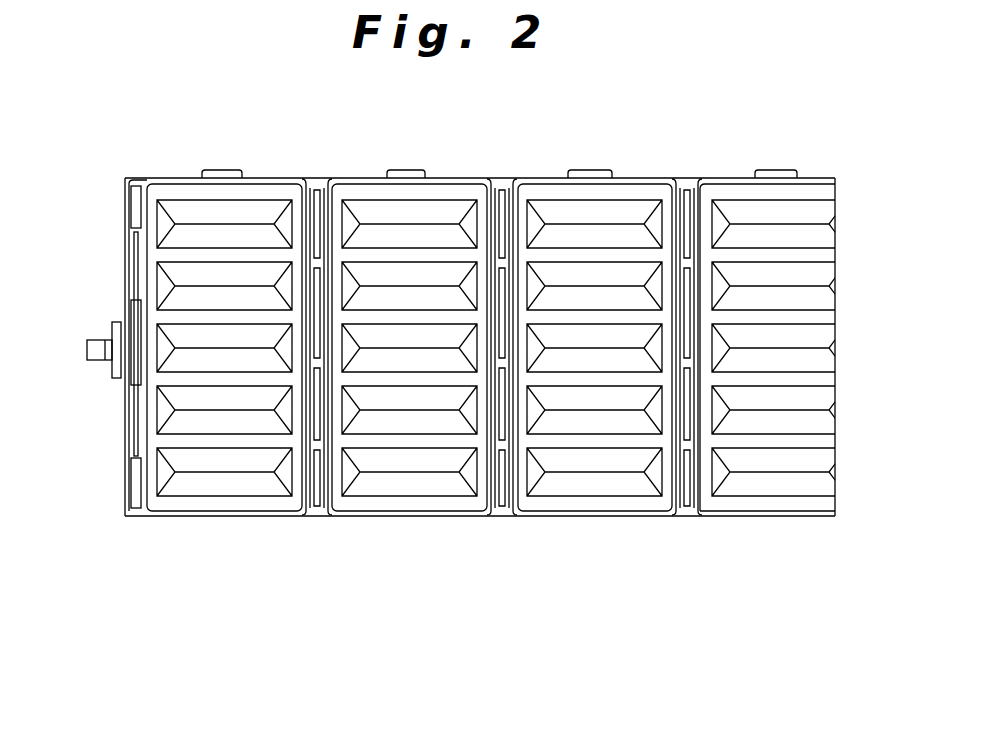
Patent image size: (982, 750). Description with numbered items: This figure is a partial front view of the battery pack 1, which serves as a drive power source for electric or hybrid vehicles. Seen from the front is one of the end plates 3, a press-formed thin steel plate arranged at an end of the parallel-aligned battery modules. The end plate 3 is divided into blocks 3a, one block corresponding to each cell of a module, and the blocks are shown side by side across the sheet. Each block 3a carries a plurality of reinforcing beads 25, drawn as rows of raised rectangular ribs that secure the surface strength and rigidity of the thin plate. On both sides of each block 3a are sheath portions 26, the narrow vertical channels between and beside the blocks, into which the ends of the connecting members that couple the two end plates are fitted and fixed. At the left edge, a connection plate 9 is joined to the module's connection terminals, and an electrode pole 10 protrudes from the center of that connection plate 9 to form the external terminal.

The battery pack 1 is at (240, 158).
The end plate 3 is at (364, 190).
The block 3a is at (272, 178).
The reinforcing bead 25 is at (445, 275).
The sheath portion 26 is at (130, 208).
The connection plate 9 is at (121, 384).
The electrode pole 10 is at (88, 352).